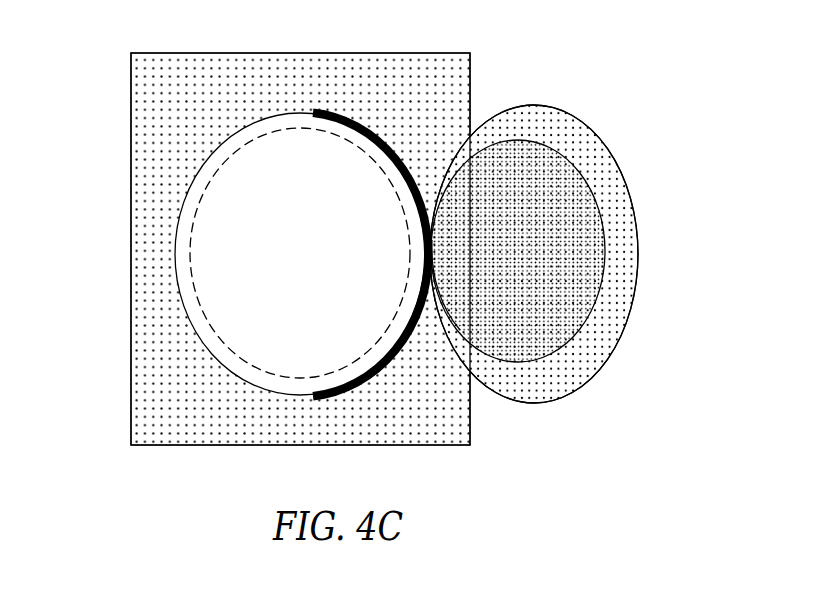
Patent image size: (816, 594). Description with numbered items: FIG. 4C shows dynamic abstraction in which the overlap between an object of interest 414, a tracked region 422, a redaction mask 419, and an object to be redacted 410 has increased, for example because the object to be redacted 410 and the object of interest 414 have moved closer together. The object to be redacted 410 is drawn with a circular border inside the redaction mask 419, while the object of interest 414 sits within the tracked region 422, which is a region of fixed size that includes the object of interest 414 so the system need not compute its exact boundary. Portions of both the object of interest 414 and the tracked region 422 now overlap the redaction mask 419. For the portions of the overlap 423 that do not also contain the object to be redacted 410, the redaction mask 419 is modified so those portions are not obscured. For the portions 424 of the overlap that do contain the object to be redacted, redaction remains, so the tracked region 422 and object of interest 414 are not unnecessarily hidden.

The object to be redacted 410 is at (192, 255).
The object of interest 414 is at (605, 227).
The redaction mask 419 is at (157, 115).
The tracked region 422 is at (532, 105).
The portions of the overlap 423 is at (453, 298).
The portions of the overlap including the object to be redacted 424 is at (368, 125).